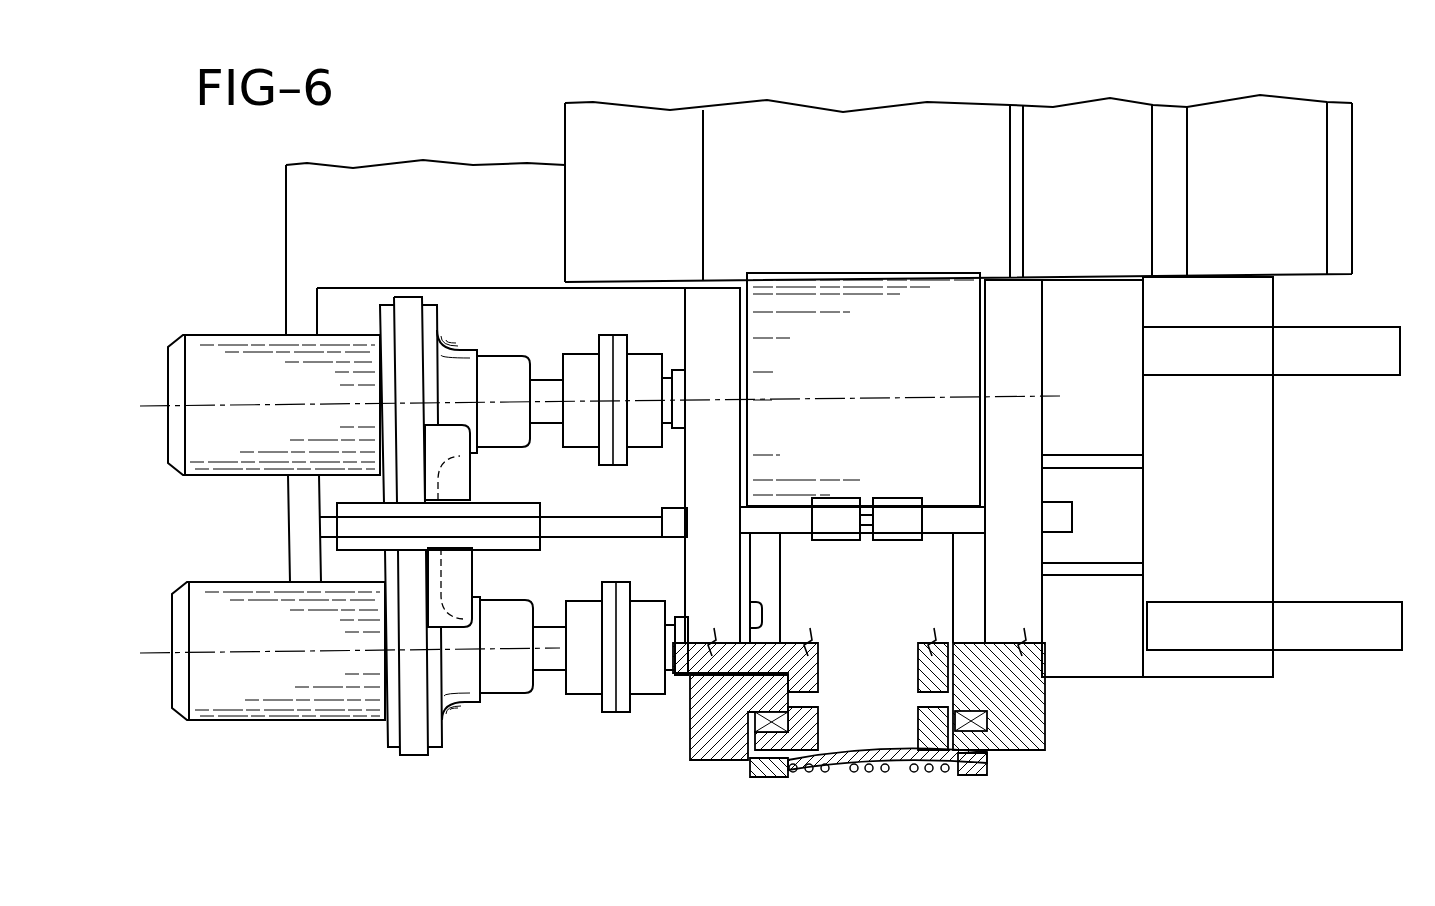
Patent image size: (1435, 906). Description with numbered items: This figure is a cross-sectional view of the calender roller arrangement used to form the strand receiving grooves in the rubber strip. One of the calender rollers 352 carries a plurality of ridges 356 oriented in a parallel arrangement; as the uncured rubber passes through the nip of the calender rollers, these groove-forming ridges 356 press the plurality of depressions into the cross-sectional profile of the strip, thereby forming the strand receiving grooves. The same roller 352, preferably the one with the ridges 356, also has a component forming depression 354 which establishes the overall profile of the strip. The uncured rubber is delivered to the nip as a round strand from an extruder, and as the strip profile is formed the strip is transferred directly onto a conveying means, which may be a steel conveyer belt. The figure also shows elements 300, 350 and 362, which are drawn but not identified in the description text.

The drive assembly 300 is at (496, 190).
The motor housing 350 is at (868, 330).
The calender roller 352 is at (975, 757).
The component forming depression 354 is at (790, 776).
The ridges 356 is at (826, 775).
The sensor tab 362 is at (750, 605).